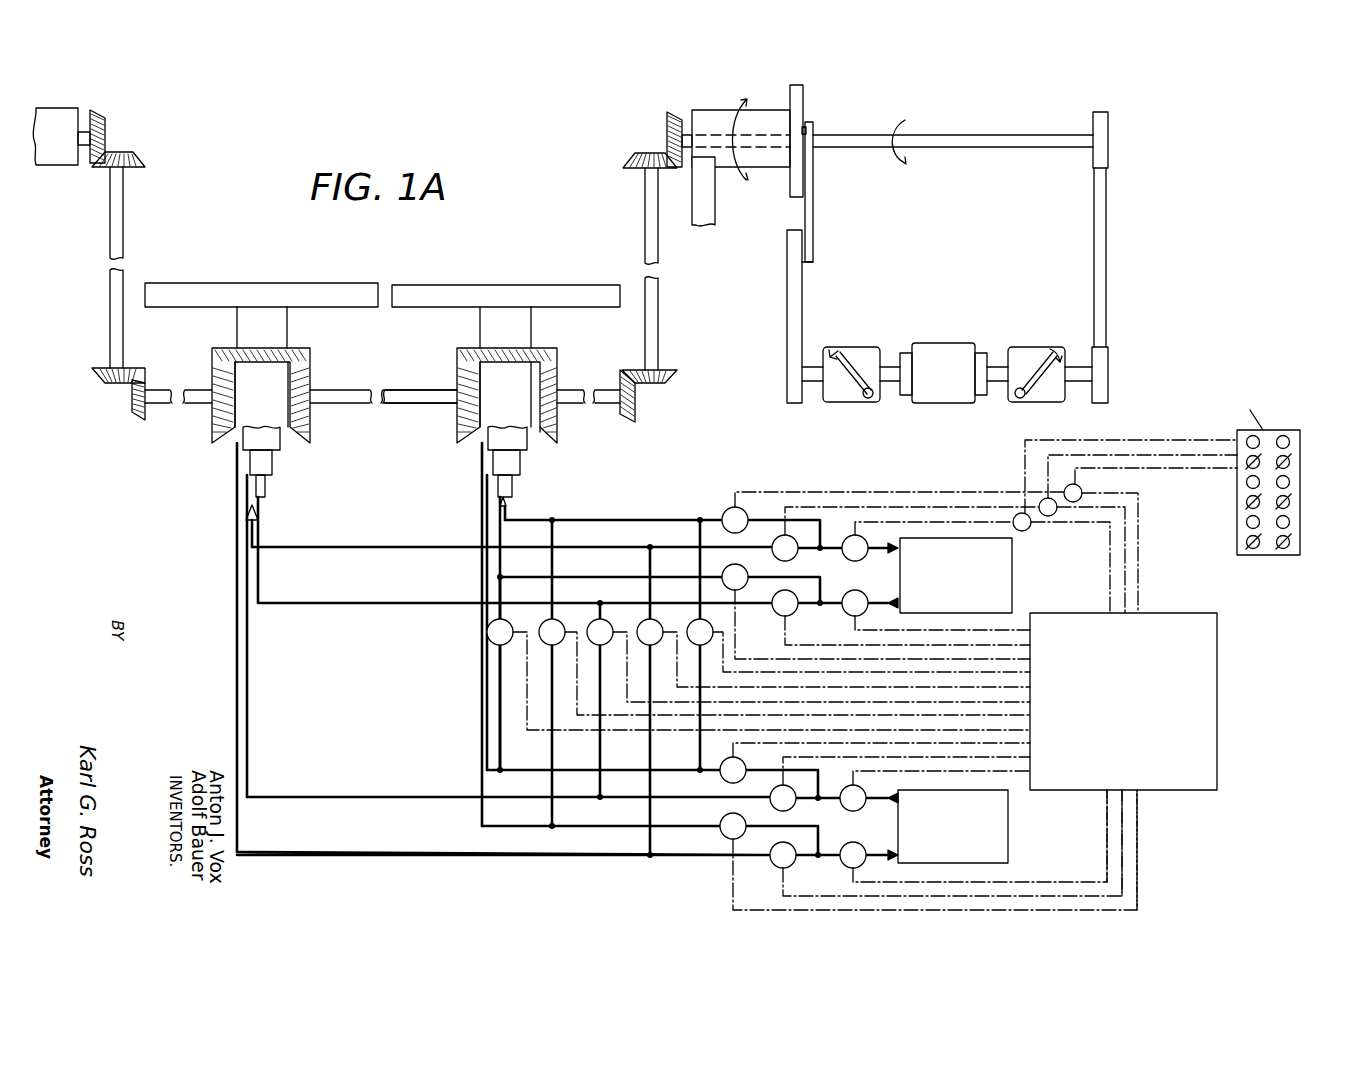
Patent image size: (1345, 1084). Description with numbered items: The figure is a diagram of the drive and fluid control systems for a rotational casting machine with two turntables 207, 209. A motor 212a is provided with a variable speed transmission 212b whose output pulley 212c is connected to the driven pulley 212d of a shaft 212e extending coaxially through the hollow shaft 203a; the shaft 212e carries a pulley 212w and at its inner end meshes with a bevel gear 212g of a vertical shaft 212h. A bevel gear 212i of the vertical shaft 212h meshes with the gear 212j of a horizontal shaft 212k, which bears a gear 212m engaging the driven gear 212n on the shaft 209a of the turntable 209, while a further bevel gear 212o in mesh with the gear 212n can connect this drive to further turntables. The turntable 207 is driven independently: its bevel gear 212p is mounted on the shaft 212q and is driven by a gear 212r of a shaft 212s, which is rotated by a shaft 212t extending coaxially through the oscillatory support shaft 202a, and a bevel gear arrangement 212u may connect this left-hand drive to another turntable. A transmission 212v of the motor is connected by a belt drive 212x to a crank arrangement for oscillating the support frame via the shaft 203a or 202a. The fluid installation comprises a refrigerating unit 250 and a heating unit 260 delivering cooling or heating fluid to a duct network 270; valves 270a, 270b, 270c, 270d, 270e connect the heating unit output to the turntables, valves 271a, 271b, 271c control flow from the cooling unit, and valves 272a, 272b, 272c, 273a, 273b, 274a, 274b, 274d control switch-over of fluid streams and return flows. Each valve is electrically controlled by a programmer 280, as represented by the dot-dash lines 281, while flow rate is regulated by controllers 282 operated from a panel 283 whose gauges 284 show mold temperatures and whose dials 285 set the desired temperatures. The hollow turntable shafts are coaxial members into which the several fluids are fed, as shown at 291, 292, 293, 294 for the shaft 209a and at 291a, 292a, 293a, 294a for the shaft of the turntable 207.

The oscillatory support shaft 202a is at (66, 110).
The shaft 212t is at (85, 165).
The turntable 207 is at (198, 290).
The shaft 212q is at (236, 332).
The gear 212r is at (212, 368).
The shaft 212s is at (172, 404).
The bevel gear 212p is at (298, 350).
The bevel gear arrangement 212u is at (312, 370).
The duct 294a is at (283, 440).
The duct 293a is at (273, 462).
The duct 292a is at (265, 485).
The duct 291a is at (258, 512).
The turntable 209 is at (511, 290).
The shaft 209a is at (531, 321).
The driven gear 212n is at (465, 350).
The bevel gear 212o is at (460, 380).
The horizontal shaft 212k is at (603, 393).
The gear 212m is at (557, 428).
The duct 294 is at (532, 434).
The duct 293 is at (527, 458).
The duct 292 is at (516, 482).
The duct 291 is at (508, 507).
The bevel gear 212i is at (676, 376).
The gear 212j is at (636, 412).
The vertical shaft 212h is at (660, 286).
The bevel gear 212g is at (630, 158).
The hollow shaft 203a is at (768, 112).
The pulley 212w is at (808, 168).
The shaft 212e is at (1010, 137).
The driven pulley 212d is at (1110, 120).
The output pulley 212c is at (1108, 372).
The belt drive 212x is at (797, 320).
The transmission 212v is at (862, 346).
The motor 212a is at (952, 345).
The variable speed transmission 212b is at (1038, 350).
The valve 273a is at (733, 507).
The valve 273b is at (783, 535).
The valve 270c is at (728, 567).
The valve 270b is at (790, 616).
The valve 270a is at (868, 585).
The valve 270e is at (489, 628).
The valve 274b is at (548, 644).
The valve 270d is at (618, 590).
The valve 274a is at (648, 618).
The voltmeter 274d is at (699, 618).
The valve 271c is at (724, 778).
The valve 272c is at (722, 820).
The valve 271b is at (772, 810).
The valve 271a is at (855, 811).
The valve 272b is at (776, 868).
The valve 272a is at (845, 862).
The heating unit 260 is at (1012, 566).
The refrigerating unit 250 is at (1008, 834).
The programmer 280 is at (1202, 677).
The dot-dash lines 281 is at (1150, 849).
The controllers 282 is at (1015, 514).
The panel 283 is at (1254, 458).
The gauges 284 is at (1290, 520).
The dials 285 is at (1250, 538).
The duct network 270 is at (554, 867).